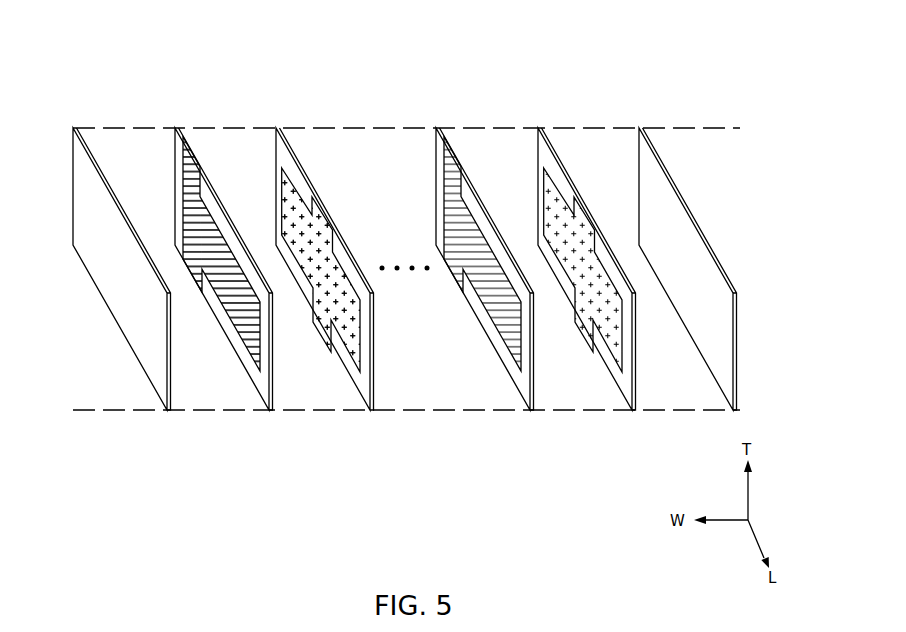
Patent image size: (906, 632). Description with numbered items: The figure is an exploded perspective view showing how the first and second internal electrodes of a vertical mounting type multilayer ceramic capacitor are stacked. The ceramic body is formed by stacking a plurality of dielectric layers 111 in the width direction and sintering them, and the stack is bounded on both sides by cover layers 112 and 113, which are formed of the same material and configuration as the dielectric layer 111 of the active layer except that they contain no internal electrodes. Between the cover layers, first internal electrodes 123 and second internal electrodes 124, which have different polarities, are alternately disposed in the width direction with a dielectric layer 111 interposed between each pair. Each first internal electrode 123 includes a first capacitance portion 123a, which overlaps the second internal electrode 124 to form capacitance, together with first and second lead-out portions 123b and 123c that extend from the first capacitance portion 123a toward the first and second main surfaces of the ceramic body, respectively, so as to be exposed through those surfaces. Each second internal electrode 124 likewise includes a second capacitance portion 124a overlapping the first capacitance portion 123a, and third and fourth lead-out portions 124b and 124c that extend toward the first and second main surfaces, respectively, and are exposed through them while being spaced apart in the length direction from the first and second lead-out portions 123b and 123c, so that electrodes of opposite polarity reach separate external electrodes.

The dielectric layer 111 is at (235, 343).
The cover layer 112 is at (131, 292).
The cover layer 113 is at (697, 292).
The first internal electrode 123 is at (273, 46).
The first capacitance portion 123a is at (238, 262).
The first lead-out portion 123b is at (192, 258).
The second lead-out portion 123c is at (212, 220).
The second internal electrode 124 is at (433, 494).
The second capacitance portion 124a is at (355, 327).
The third lead-out portion 124b is at (323, 308).
The fourth lead-out portion 124c is at (303, 255).